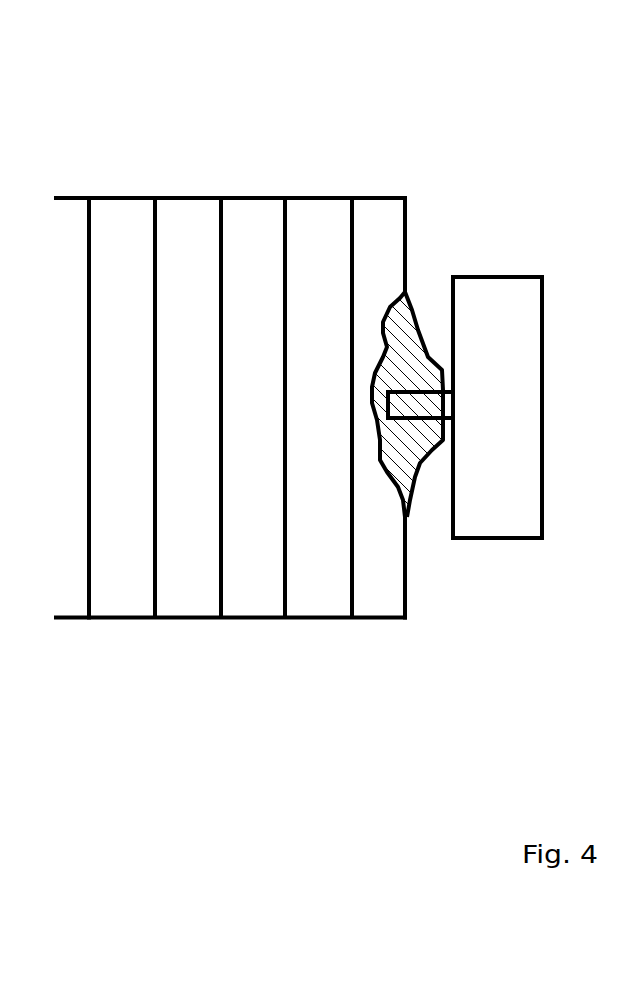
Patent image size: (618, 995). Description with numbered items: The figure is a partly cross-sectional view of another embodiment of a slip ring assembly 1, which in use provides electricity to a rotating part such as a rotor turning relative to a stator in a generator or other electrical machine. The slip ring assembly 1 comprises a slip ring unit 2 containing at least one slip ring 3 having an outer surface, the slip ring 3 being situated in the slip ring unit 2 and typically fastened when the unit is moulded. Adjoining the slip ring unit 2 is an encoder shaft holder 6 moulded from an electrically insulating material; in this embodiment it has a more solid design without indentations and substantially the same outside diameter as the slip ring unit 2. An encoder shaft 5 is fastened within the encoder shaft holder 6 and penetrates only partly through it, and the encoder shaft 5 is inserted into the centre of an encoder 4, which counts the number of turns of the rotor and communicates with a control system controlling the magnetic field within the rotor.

The slip ring assembly 1 is at (100, 112).
The slip ring unit 2 is at (313, 258).
The slip ring 3 is at (115, 573).
The encoder 4 is at (500, 310).
The encoder shaft 5 is at (437, 420).
The encoder shaft holder 6 is at (380, 580).